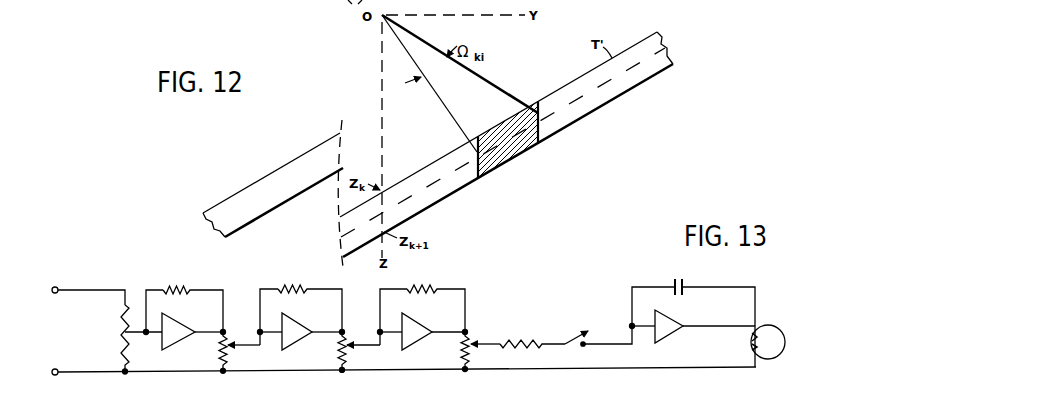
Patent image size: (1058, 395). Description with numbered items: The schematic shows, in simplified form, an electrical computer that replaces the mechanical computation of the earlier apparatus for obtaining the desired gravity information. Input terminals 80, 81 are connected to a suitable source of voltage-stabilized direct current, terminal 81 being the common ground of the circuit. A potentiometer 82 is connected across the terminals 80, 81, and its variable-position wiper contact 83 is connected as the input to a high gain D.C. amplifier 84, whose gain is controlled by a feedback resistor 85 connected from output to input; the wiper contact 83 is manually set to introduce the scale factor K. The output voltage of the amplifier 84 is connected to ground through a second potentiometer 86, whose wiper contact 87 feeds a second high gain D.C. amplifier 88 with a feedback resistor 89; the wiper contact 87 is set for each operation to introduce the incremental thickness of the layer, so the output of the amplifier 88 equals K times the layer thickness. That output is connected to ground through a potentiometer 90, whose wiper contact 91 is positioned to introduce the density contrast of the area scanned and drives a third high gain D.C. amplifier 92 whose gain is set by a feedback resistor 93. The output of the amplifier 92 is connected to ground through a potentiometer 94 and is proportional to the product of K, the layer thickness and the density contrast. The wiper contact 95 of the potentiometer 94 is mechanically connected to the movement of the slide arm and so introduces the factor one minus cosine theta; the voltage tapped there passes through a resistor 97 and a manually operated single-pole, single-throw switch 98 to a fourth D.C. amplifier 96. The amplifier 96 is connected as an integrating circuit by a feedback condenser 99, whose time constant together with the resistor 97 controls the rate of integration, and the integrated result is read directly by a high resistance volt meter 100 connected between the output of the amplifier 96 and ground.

The input terminal 80 is at (60, 287).
The input terminal 81 is at (60, 363).
The potentiometer 82 is at (124, 331).
The wiper contact 83 is at (137, 331).
The high gain D.C. amplifier 84 is at (185, 325).
The feedback resistor 85 is at (176, 289).
The second potentiometer 86 is at (220, 357).
The wiper contact 87 is at (236, 343).
The second high gain D.C. amplifier 88 is at (299, 323).
The feedback resistor 89 is at (290, 288).
The potentiometer 90 is at (340, 354).
The wiper contact 91 is at (358, 343).
The third high gain D.C. amplifier 92 is at (420, 321).
The feedback resistor 93 is at (420, 284).
The potentiometer 94 is at (461, 350).
The wiper contact 95 is at (491, 334).
The fourth D.C. amplifier 96 is at (676, 322).
The resistor 97 is at (516, 343).
The single-pole, single-throw switch 98 is at (575, 331).
The feedback condenser 99 is at (677, 276).
The high resistance volt meter 100 is at (775, 326).